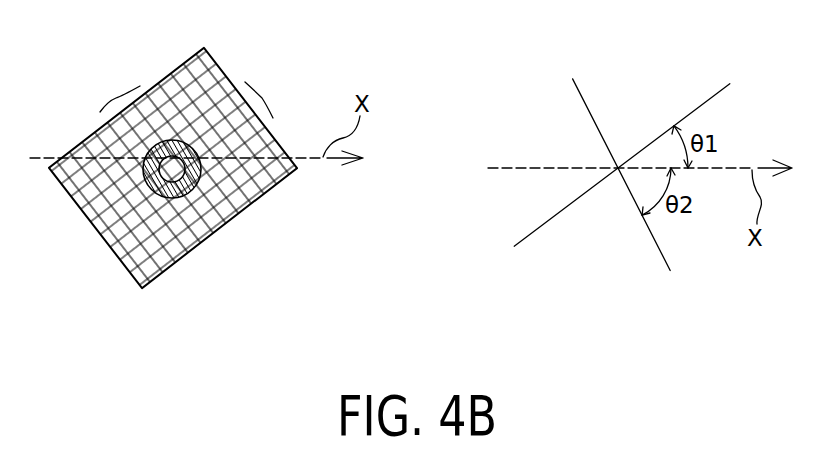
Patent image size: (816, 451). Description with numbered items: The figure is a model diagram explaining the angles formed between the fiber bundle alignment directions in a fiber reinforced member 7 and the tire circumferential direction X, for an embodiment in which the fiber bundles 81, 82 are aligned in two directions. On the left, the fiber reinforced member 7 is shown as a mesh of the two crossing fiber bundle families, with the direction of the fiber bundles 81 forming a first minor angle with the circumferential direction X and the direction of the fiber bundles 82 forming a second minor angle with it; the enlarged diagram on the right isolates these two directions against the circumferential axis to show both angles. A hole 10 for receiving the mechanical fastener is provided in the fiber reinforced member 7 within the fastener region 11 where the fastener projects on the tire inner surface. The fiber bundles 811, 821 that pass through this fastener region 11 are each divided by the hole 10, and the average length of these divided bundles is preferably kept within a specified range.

The fiber reinforced member 7 is at (226, 75).
The fiber bundle passing through the fastener region 821 is at (117, 97).
The fiber bundle passing through the fastener region 811 is at (262, 98).
The hole 10 is at (78, 206).
The fastener region 11 is at (171, 172).
The fiber bundles 81 is at (238, 215).
The fiber bundles 82 is at (186, 193).